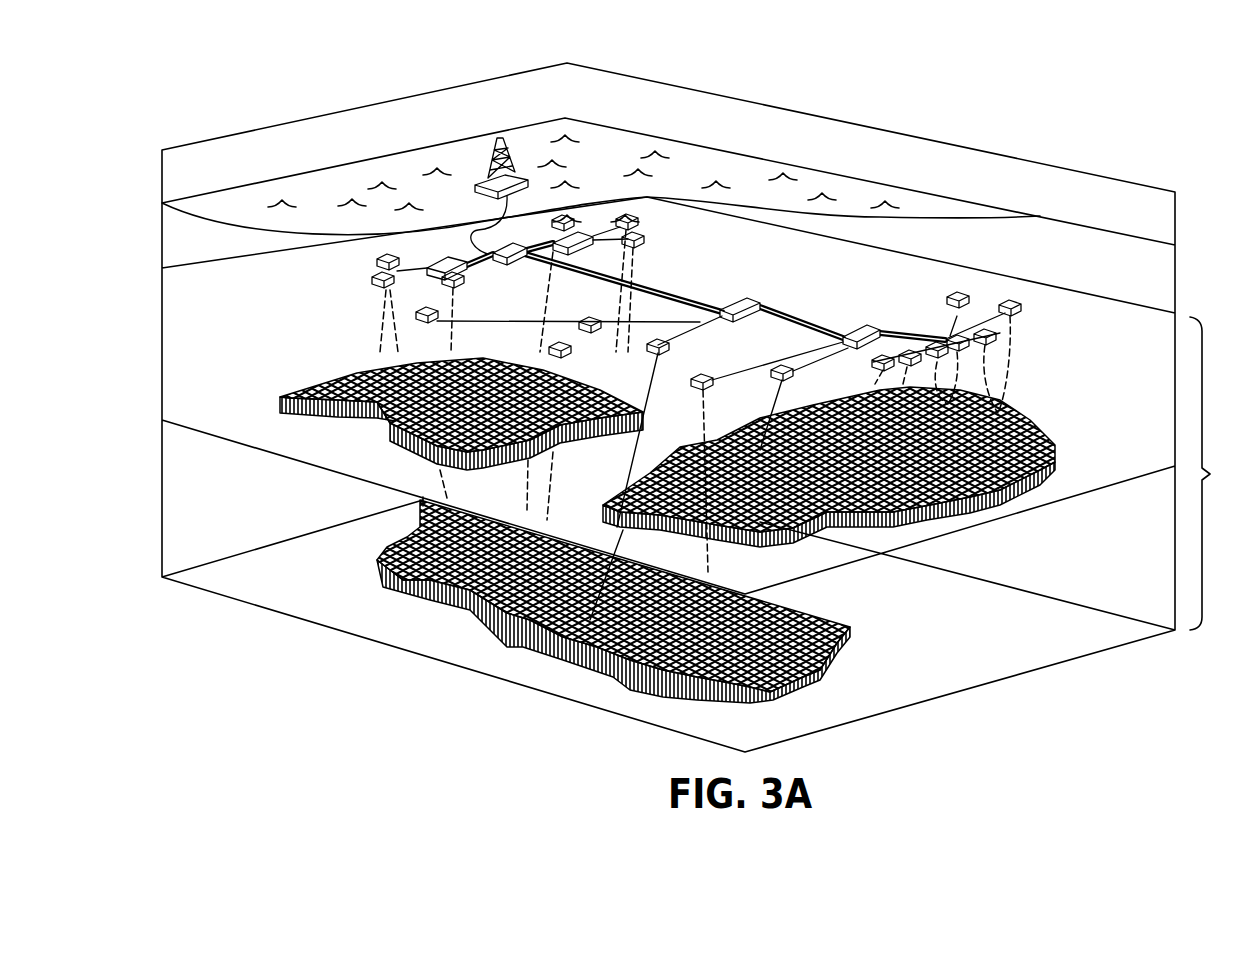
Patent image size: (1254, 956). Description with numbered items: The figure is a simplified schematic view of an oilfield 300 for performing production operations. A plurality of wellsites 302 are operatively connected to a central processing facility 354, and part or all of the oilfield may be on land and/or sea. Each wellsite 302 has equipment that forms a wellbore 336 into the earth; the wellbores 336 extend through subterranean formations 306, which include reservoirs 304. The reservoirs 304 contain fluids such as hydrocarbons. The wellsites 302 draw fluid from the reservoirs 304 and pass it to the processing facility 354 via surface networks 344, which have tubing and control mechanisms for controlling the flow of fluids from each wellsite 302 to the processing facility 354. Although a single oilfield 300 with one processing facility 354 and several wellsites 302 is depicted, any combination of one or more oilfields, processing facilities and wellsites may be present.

The oilfield 300 is at (216, 110).
The wellsite 302 is at (802, 346).
The reservoir 304 is at (957, 532).
The subterranean formation 306 is at (1218, 473).
The wellbore 336 is at (1018, 377).
The surface network 344 is at (419, 277).
The central processing facility 354 is at (486, 158).